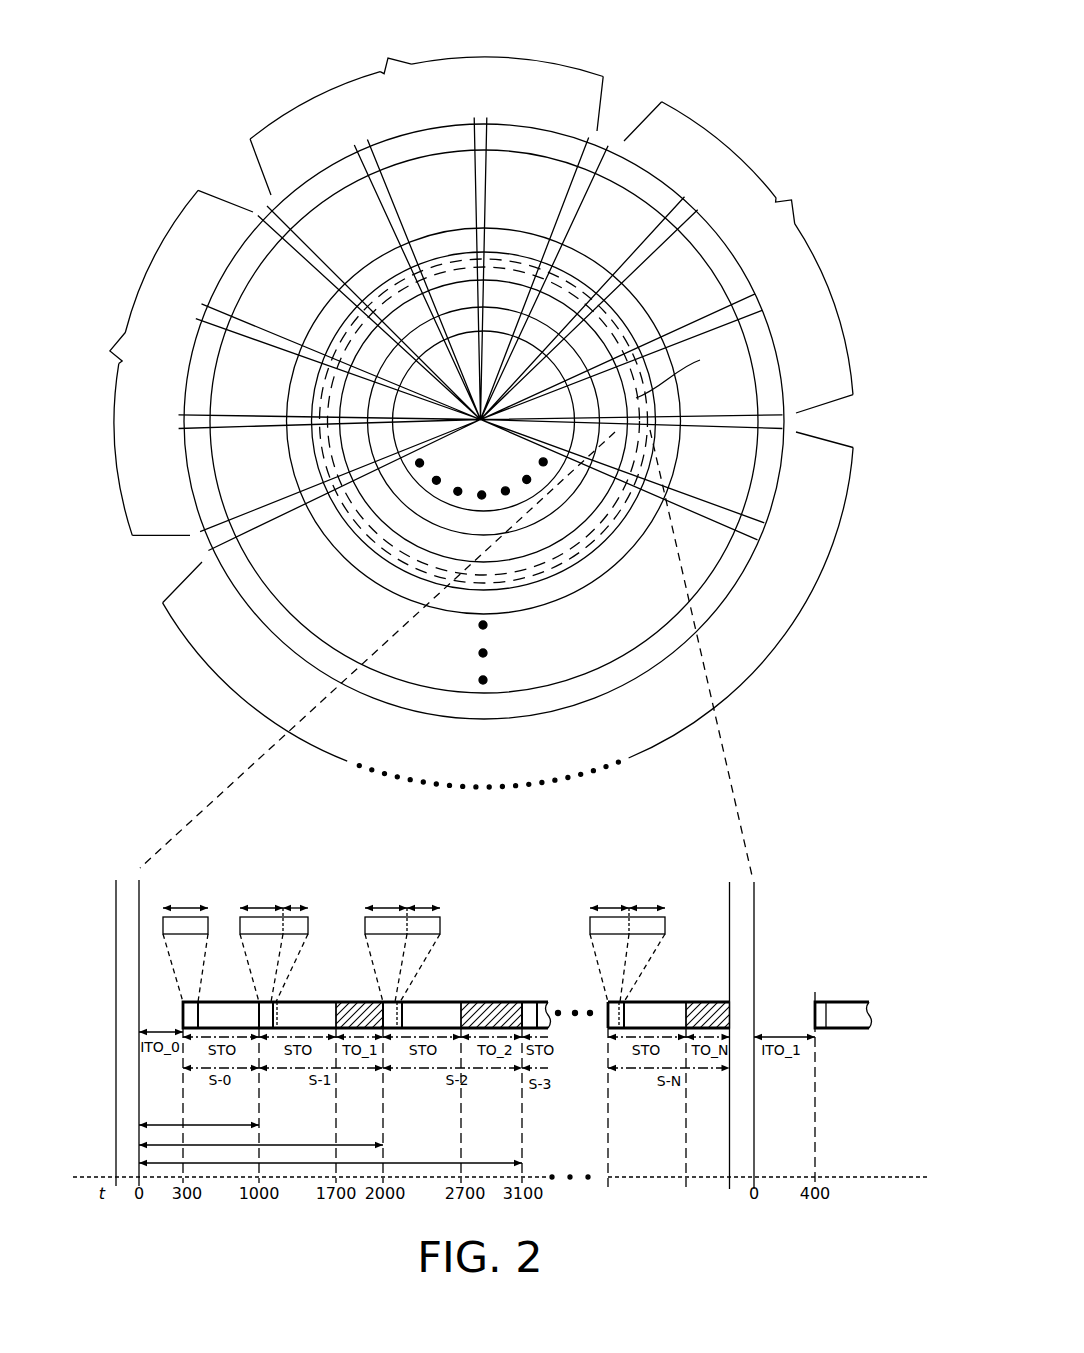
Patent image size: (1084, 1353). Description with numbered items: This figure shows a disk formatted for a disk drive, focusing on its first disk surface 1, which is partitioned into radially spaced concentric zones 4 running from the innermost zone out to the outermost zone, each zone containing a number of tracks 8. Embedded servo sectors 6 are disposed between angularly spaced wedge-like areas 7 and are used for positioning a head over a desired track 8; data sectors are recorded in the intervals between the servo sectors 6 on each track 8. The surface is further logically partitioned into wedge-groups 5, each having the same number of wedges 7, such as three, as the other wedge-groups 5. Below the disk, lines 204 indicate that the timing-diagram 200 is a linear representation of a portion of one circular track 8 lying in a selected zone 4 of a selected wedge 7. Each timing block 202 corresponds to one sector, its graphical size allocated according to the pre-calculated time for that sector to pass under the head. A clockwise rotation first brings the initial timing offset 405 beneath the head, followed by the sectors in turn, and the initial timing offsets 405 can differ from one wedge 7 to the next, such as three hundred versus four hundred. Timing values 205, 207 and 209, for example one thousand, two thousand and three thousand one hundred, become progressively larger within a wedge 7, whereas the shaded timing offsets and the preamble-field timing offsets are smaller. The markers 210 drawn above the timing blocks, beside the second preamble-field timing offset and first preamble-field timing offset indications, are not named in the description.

The disk surface 1 is at (597, 619).
The zone 4 is at (227, 558).
The wedge-group 5 is at (473, 408).
The servo sector 6 is at (755, 527).
The wedge 7 is at (782, 488).
The track 8 is at (626, 338).
The timing-diagram 200 is at (503, 973).
The timing block 202 is at (850, 1002).
The lines 204 is at (738, 790).
The timing value 205 is at (170, 1124).
The timing value 207 is at (320, 1144).
The timing value 209 is at (430, 1163).
The sector pulse 210 is at (163, 933).
The initial timing offset 405 is at (160, 1031).